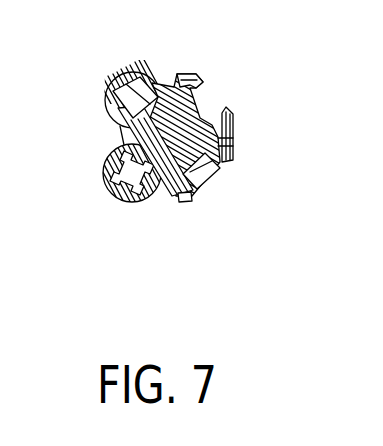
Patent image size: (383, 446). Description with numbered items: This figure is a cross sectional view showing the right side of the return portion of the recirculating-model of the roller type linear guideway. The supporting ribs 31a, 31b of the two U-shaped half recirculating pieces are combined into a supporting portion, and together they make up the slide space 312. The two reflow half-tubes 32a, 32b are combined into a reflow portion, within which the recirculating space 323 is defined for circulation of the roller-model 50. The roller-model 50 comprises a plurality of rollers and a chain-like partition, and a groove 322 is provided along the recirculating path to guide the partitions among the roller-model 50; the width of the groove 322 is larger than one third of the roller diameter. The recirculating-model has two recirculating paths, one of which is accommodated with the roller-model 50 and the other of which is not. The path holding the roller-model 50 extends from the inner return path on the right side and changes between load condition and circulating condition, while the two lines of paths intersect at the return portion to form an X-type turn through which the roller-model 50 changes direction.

The supporting rib 31a is at (190, 79).
The supporting rib 31b is at (233, 120).
The slide space 312 is at (199, 113).
The reflow half-tube 32a is at (106, 92).
The reflow half-tube 32b is at (120, 76).
The groove 322 is at (122, 150).
The recirculating space 323 is at (116, 185).
The roller-model 50 is at (142, 96).